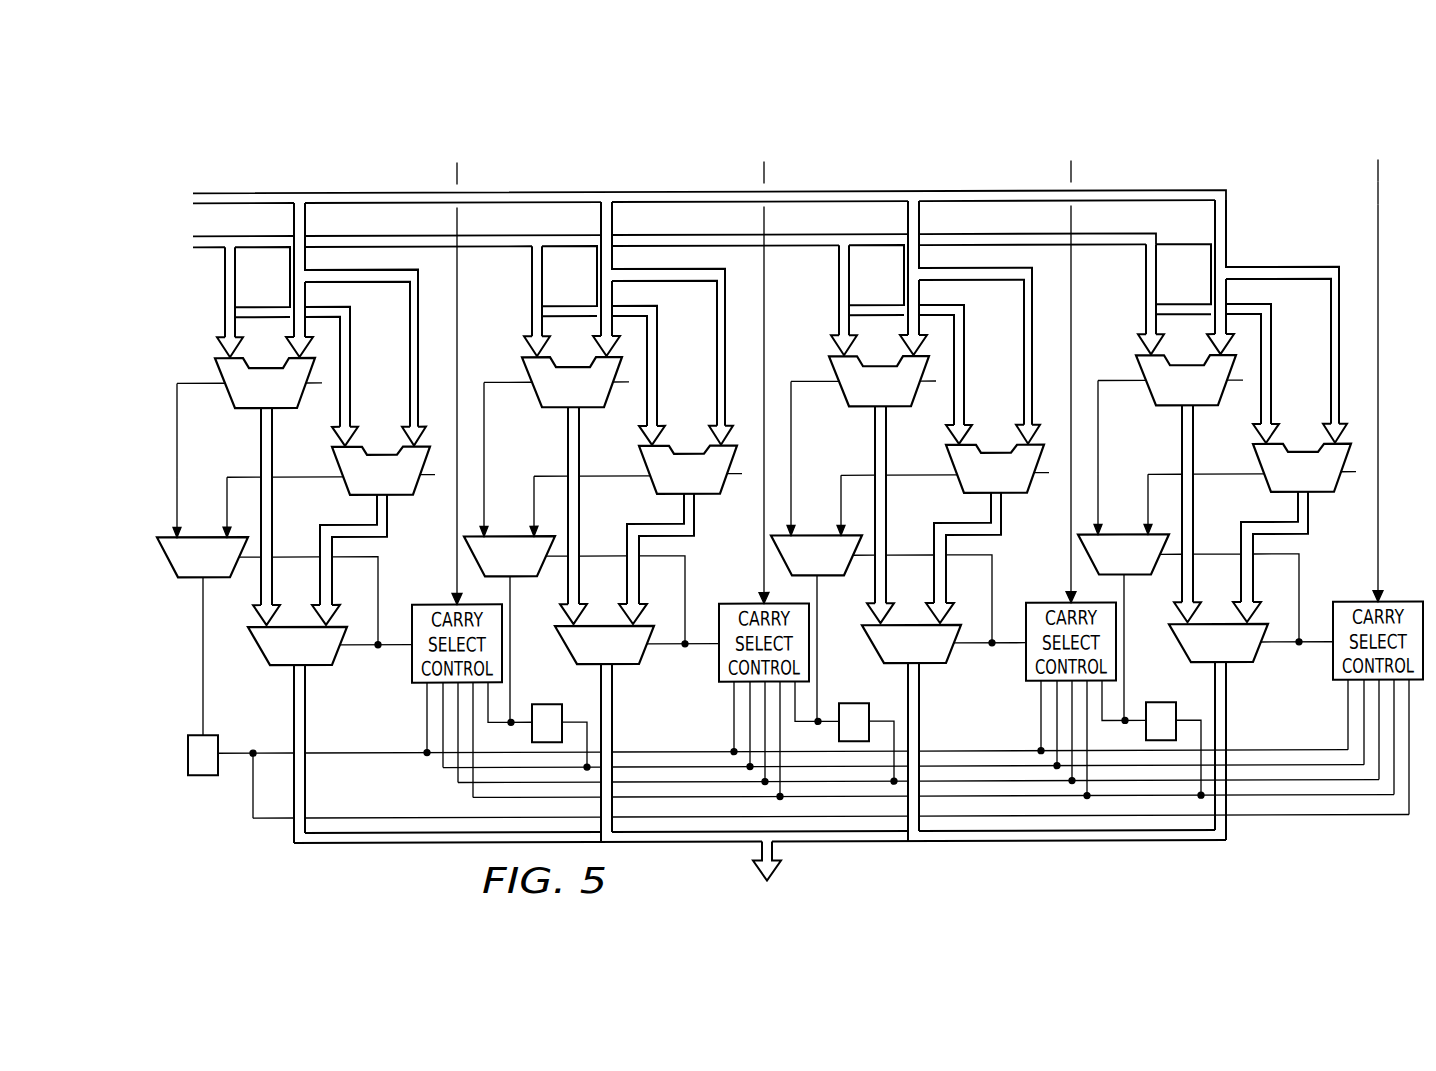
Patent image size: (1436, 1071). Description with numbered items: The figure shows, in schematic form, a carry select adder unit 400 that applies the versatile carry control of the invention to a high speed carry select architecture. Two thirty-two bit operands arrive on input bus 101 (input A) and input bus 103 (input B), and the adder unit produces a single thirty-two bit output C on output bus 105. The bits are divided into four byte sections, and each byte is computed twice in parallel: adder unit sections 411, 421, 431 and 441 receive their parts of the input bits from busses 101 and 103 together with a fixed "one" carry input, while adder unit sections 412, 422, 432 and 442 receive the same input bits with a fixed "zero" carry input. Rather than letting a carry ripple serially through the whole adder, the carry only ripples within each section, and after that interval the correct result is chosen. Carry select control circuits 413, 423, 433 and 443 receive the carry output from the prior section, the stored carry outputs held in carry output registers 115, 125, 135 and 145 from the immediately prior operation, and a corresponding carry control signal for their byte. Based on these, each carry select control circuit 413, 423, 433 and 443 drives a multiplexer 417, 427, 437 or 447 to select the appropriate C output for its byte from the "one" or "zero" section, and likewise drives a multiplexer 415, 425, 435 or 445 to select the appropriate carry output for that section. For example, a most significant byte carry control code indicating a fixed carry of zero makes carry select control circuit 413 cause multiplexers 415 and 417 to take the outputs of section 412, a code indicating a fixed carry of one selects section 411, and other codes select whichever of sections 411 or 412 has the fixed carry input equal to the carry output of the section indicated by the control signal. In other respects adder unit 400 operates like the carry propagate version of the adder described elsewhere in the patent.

The input bus 101 is at (353, 191).
The input bus 103 is at (483, 248).
The output bus 105 is at (773, 849).
The carry output register 115 is at (203, 777).
The carry output register 125 is at (547, 703).
The carry output register 135 is at (854, 703).
The carry output register 145 is at (1161, 703).
The adder unit 400 is at (886, 158).
The adder unit section 411 is at (247, 410).
The adder unit section 412 is at (400, 498).
The carry select control circuit 413 is at (433, 604).
The multiplexer 415 is at (208, 535).
The multiplexer 417 is at (318, 669).
The adder unit section 421 is at (584, 405).
The adder unit section 422 is at (699, 495).
The carry select control circuit 423 is at (761, 616).
The multiplexer 425 is at (509, 530).
The multiplexer 427 is at (606, 669).
The adder unit section 431 is at (891, 404).
The adder unit section 432 is at (1006, 494).
The carry select control circuit 433 is at (1068, 615).
The multiplexer 435 is at (816, 529).
The multiplexer 437 is at (913, 668).
The adder unit section 441 is at (1197, 403).
The adder unit section 442 is at (1313, 493).
The carry select control circuit 443 is at (1375, 614).
The multiplexer 445 is at (1123, 528).
The multiplexer 447 is at (1220, 667).